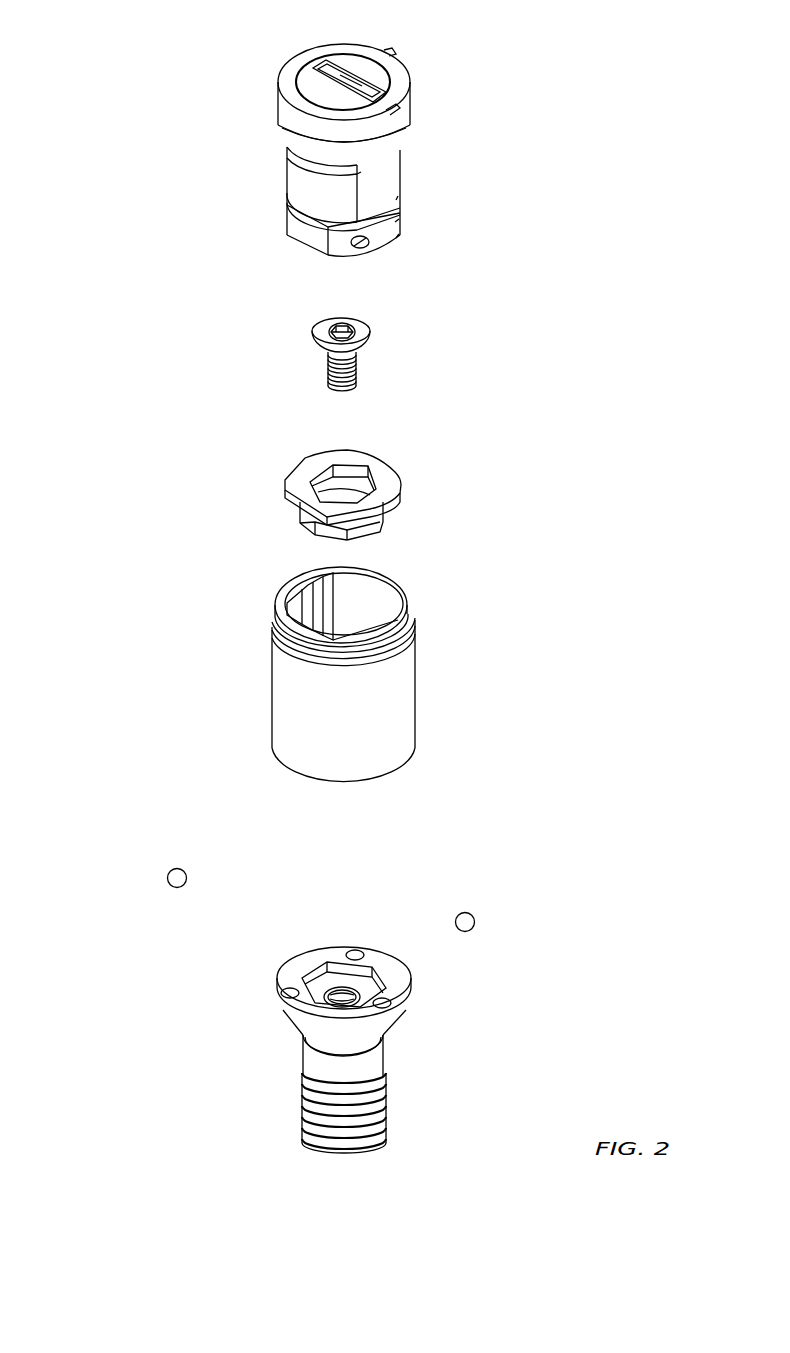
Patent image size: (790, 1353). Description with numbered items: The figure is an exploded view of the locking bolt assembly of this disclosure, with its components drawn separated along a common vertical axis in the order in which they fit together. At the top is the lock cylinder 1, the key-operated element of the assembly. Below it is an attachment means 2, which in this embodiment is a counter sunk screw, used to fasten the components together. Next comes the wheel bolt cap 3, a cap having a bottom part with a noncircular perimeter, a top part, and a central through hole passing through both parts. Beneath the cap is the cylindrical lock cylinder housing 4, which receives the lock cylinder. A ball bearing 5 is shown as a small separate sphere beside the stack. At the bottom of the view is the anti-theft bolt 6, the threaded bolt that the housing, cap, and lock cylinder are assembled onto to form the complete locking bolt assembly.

The lock cylinder 1 is at (300, 104).
The attachment means 2 is at (365, 337).
The wheel bolt cap 3 is at (298, 487).
The lock cylinder housing 4 is at (410, 655).
The ball bearing 5 is at (168, 870).
The anti-theft bolt 6 is at (358, 1068).